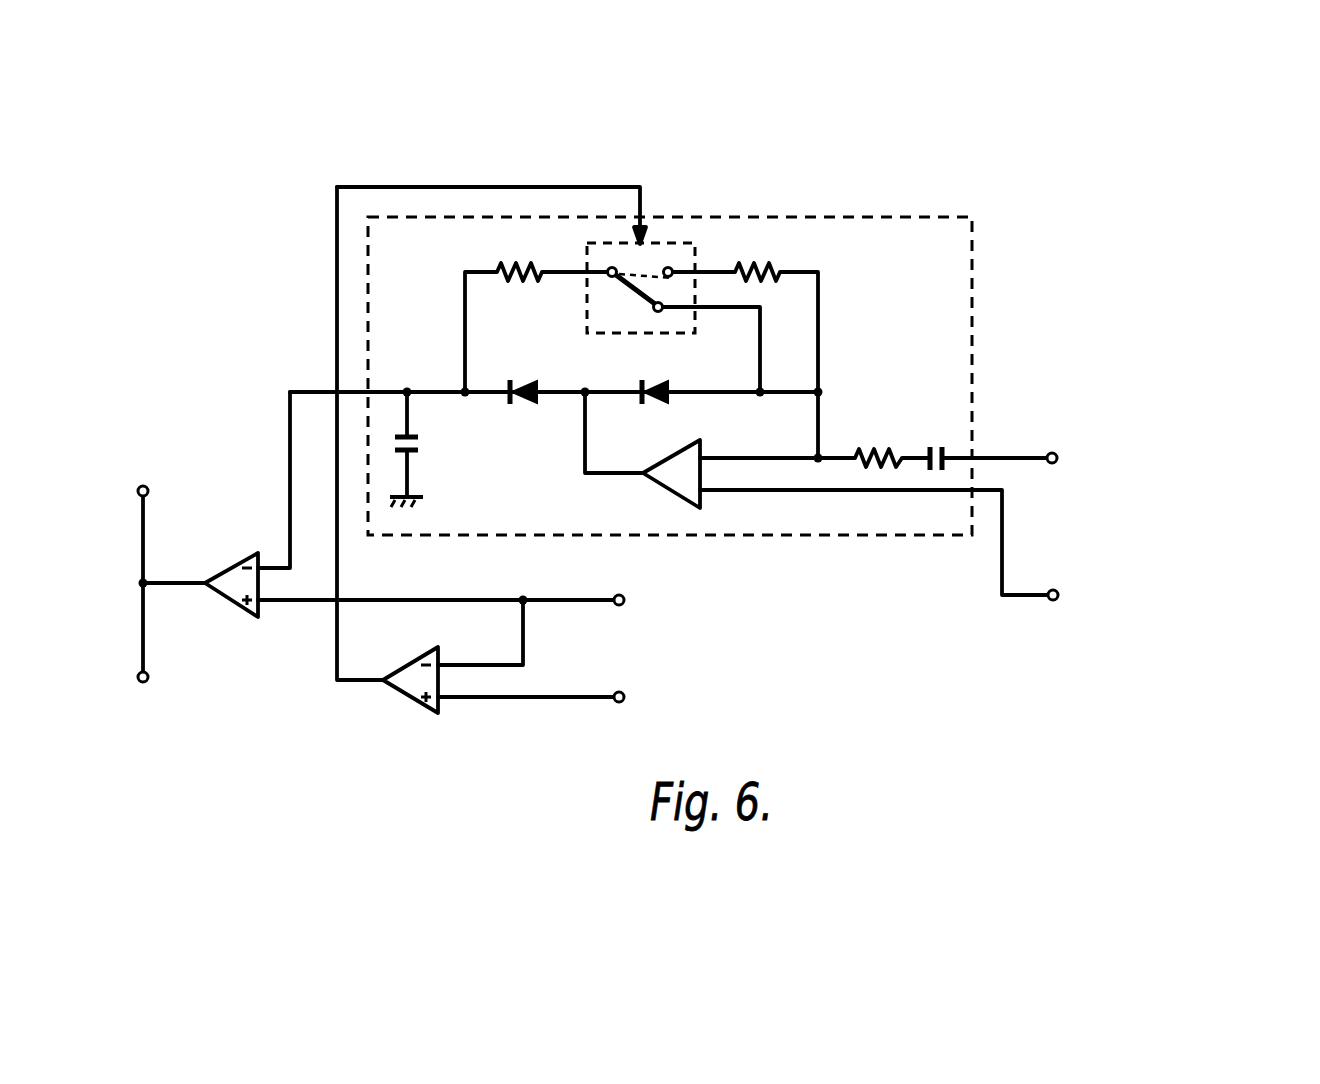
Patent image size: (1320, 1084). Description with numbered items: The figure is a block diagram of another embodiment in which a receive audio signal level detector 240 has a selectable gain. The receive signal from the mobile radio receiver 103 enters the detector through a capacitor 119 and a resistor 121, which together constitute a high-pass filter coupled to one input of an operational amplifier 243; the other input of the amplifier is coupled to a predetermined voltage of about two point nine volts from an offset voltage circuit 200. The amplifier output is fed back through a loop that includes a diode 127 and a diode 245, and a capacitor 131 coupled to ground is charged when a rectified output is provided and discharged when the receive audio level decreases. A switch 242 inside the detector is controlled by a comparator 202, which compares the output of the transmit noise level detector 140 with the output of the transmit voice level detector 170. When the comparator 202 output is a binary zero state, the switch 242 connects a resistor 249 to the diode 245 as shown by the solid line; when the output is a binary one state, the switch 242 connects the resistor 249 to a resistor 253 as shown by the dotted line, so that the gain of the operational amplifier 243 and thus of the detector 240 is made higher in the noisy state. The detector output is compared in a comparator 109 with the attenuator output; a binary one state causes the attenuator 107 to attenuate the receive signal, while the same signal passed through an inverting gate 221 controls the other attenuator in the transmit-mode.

The receive audio signal level detector 240 is at (972, 217).
The resistor 249 is at (516, 262).
The resistor 253 is at (752, 262).
The switch 242 is at (586, 283).
The diode 245 is at (668, 385).
The diode 127 is at (523, 404).
The capacitor 131 is at (418, 438).
The operational amplifier 243 is at (668, 494).
The resistor 121 is at (868, 445).
The capacitor 119 is at (939, 445).
The comparator 109 is at (222, 568).
The comparator 202 is at (415, 700).
The attenuator 107 is at (144, 473).
The inverting gate 221 is at (141, 706).
The transmit voice level detector 170 is at (755, 597).
The transmit noise level detector 140 is at (755, 695).
The radio receiver 103 is at (1152, 459).
The offset voltage circuit 200 is at (1171, 609).